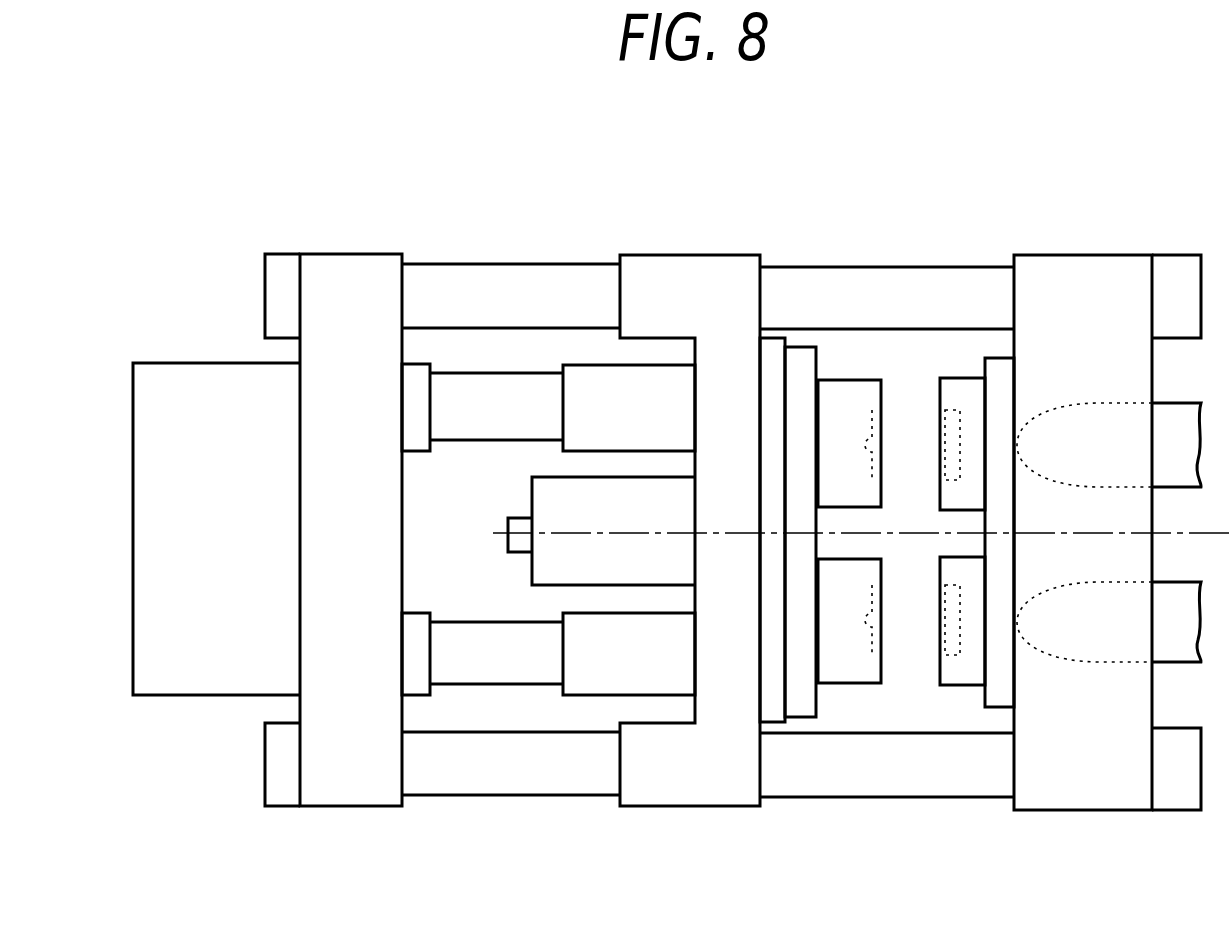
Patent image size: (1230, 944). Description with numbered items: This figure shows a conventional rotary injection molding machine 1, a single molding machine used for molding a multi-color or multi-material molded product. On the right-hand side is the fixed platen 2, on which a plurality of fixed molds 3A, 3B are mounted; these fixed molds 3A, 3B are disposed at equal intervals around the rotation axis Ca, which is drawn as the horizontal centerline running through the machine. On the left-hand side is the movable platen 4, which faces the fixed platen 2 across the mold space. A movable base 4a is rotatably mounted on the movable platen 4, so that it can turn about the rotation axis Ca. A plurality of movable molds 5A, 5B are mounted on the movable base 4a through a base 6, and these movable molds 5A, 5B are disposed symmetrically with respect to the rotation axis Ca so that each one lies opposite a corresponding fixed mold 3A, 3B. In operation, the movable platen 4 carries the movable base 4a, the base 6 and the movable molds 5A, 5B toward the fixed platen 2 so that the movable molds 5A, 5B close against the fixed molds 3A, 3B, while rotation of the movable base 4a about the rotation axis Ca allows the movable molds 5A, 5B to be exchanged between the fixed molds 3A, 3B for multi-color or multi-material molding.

The rotary injection molding machine 1 is at (930, 172).
The fixed platen 2 is at (1086, 254).
The fixed mold 3A is at (965, 685).
The fixed mold 3B is at (957, 378).
The movable platen 4 is at (685, 254).
The movable base 4a is at (786, 372).
The movable mold 5A is at (847, 683).
The movable mold 5B is at (853, 380).
The base 6 is at (800, 722).
The rotation axis Ca is at (555, 531).